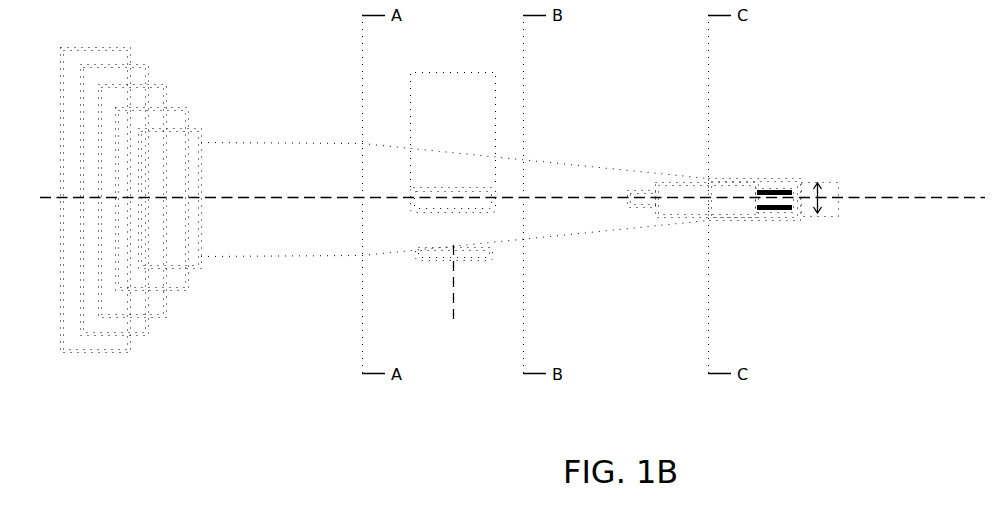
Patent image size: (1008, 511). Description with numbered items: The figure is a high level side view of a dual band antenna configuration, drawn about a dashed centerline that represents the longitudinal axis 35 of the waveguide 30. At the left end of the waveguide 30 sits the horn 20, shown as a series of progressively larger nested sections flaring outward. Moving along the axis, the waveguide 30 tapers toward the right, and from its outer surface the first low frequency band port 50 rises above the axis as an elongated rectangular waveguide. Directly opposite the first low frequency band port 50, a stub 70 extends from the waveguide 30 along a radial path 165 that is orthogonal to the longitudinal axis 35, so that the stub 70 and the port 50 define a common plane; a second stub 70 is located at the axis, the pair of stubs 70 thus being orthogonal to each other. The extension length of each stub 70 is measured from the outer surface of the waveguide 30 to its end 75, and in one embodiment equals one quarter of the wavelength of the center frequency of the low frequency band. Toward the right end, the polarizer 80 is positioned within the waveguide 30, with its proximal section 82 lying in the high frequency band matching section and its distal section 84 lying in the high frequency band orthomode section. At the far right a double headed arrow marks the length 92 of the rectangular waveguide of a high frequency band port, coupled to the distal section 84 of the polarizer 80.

The horn 20 is at (140, 70).
The waveguide 30 is at (247, 153).
The longitudinal axis 35 is at (300, 198).
The first low frequency band port 50 is at (425, 85).
The stub 70 is at (472, 190).
The end 75 is at (437, 258).
The polarizer 80 is at (733, 180).
The proximal section 82 is at (682, 187).
The distal section 84 is at (725, 207).
The length 92 is at (822, 208).
The radial path 165 is at (453, 300).